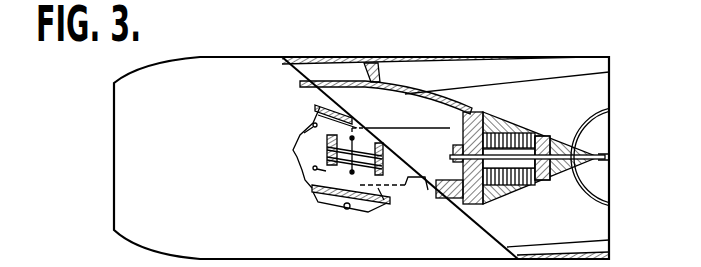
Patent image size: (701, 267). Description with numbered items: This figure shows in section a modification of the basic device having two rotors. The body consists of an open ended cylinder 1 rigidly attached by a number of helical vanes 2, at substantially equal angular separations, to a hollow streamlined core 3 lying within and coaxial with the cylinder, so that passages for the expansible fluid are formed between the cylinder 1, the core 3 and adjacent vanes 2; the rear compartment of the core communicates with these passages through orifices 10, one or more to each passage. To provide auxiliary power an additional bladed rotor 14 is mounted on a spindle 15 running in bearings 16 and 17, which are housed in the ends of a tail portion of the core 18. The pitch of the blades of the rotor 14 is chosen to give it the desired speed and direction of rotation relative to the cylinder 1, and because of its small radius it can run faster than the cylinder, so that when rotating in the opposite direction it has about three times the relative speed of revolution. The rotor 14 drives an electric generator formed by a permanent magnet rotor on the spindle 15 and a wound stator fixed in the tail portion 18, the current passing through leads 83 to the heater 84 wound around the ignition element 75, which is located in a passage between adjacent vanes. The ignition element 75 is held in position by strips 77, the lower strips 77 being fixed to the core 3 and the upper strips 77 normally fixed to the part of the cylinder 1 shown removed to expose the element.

The open ended cylinder 1 is at (437, 60).
The helical vanes 2 is at (383, 73).
The hollow streamlined core 3 is at (431, 97).
The orifices 10 is at (296, 135).
The bladed rotor 14 is at (610, 147).
The spindle 15 is at (452, 156).
The bearing 16 is at (462, 184).
The bearing 17 is at (564, 186).
The tail portion of the core 18 is at (524, 118).
The ignition element 75 is at (328, 150).
The strips 77 is at (337, 164).
The leads 83 is at (401, 129).
The heater 84 is at (372, 129).